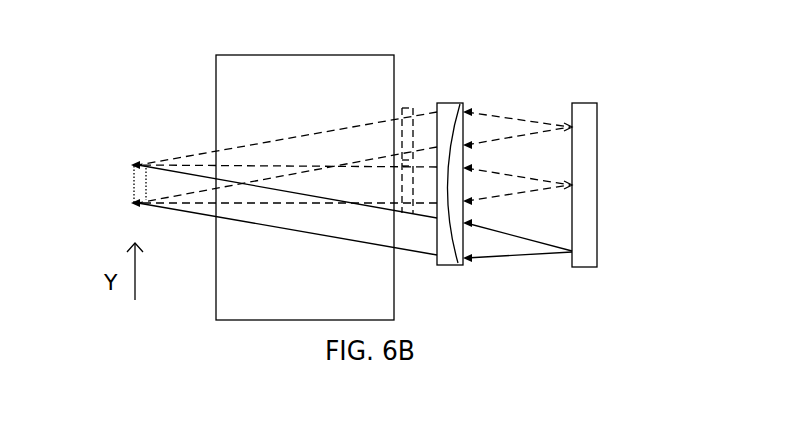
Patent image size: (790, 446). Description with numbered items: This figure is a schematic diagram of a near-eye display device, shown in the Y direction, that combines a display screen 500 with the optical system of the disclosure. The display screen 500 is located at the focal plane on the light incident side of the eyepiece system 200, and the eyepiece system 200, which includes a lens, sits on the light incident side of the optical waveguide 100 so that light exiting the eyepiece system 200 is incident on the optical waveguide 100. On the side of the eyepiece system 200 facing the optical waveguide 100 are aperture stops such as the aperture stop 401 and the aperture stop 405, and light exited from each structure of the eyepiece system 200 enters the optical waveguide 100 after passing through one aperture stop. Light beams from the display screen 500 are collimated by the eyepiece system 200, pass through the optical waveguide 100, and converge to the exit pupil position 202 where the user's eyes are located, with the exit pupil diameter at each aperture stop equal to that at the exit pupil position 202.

The optical waveguide 100 is at (281, 167).
The eyepiece system 200 is at (485, 166).
The exit pupil position 202 is at (95, 176).
The aperture stop 401 is at (463, 243).
The aperture stop 405 is at (447, 126).
The display screen 500 is at (597, 160).